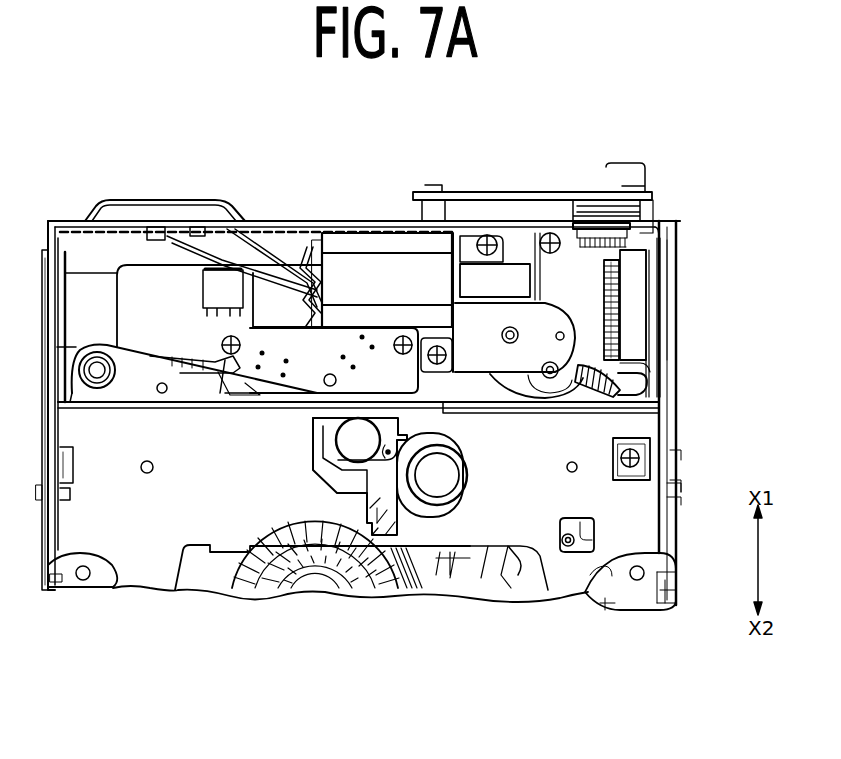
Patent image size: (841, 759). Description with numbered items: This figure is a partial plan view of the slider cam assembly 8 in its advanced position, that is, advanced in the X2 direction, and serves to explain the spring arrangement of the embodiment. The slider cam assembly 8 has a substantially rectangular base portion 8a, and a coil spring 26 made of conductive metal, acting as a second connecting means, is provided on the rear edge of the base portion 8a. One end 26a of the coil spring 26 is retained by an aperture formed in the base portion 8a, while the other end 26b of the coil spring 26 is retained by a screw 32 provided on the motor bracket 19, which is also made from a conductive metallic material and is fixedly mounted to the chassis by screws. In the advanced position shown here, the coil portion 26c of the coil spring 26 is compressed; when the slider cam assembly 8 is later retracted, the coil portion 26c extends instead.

The slider cam assembly 8 is at (140, 528).
The base portion 8a is at (637, 510).
The motor bracket 19 is at (482, 323).
The screw 32 is at (548, 360).
The coil spring 26 is at (613, 350).
The one end of the coil spring 26a is at (648, 369).
The other end of the coil spring 26b is at (585, 357).
The coil portion 26c is at (612, 365).